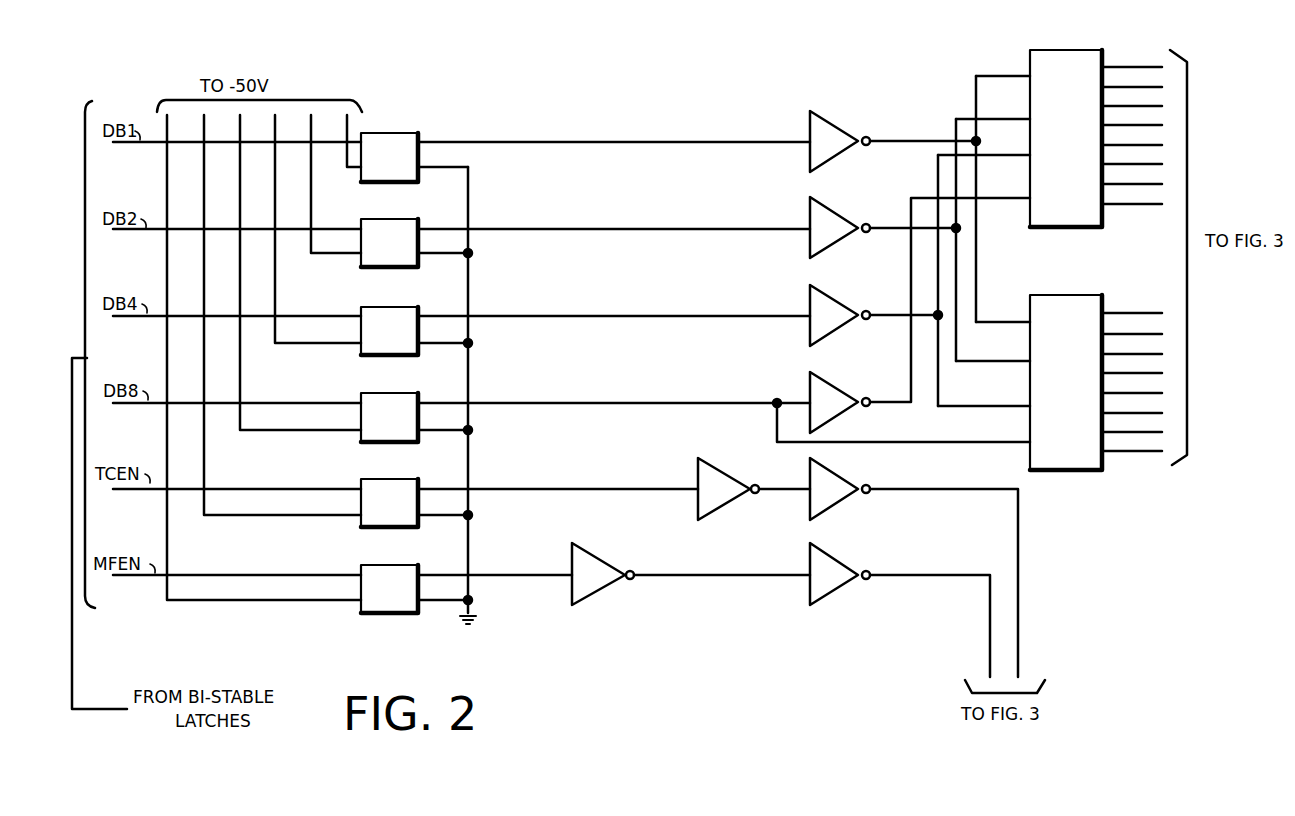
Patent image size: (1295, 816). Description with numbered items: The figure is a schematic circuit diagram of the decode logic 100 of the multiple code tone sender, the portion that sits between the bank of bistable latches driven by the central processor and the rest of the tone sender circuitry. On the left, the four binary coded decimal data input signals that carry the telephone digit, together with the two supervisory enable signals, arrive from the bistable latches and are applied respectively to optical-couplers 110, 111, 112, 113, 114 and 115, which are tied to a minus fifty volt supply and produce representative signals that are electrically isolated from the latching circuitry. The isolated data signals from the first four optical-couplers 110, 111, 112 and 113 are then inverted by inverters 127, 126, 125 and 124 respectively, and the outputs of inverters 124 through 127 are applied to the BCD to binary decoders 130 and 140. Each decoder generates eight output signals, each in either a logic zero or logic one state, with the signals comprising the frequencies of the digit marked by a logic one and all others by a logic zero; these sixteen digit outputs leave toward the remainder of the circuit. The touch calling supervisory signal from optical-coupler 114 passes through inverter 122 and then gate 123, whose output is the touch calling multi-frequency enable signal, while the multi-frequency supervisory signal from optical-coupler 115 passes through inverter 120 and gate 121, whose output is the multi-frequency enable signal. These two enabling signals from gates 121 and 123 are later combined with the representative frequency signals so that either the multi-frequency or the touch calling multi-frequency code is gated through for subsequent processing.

The decode logic 100 is at (626, 747).
The optical-coupler 110 is at (404, 168).
The optical-coupler 111 is at (404, 254).
The optical-coupler 112 is at (404, 342).
The optical-coupler 113 is at (404, 429).
The optical-coupler 114 is at (404, 515).
The optical-coupler 115 is at (404, 601).
The inverter 120 is at (607, 567).
The gate 121 is at (804, 561).
The inverter 122 is at (700, 465).
The gate 123 is at (811, 481).
The inverter 124 is at (805, 394).
The inverter 125 is at (805, 308).
The inverter 126 is at (805, 216).
The inverter 127 is at (805, 115).
The BCD to binary decoder 130 is at (1082, 153).
The BCD to binary decoder 140 is at (1083, 394).